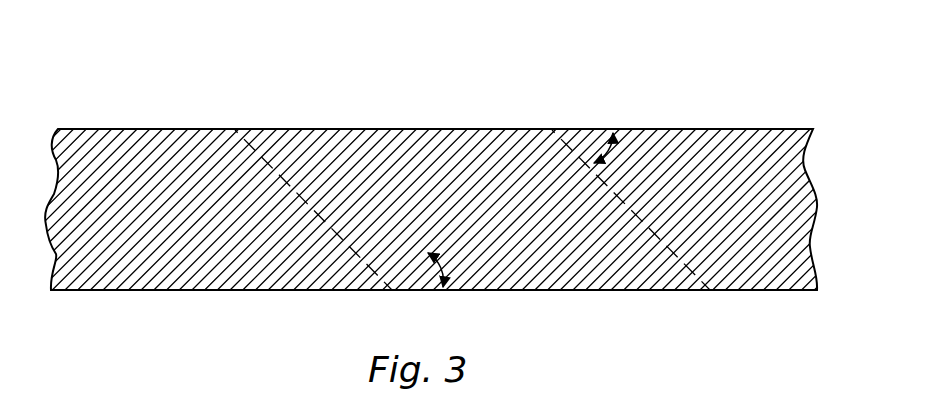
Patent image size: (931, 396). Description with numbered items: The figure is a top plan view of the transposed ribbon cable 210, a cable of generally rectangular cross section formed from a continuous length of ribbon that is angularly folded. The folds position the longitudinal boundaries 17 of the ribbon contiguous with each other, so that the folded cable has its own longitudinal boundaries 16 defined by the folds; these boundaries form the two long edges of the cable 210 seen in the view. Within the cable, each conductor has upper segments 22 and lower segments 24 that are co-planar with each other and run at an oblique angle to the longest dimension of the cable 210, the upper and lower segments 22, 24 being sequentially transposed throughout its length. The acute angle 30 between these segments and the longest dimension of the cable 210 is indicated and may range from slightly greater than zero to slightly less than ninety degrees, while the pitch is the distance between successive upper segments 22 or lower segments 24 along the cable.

The transposed ribbon cable 210 is at (703, 64).
The longitudinal boundaries 16 is at (392, 129).
The longitudinal boundaries of ribbon 17 is at (187, 172).
The upper segments 22 is at (157, 207).
The lower segments 24 is at (357, 253).
The acute angle 30 is at (594, 137).